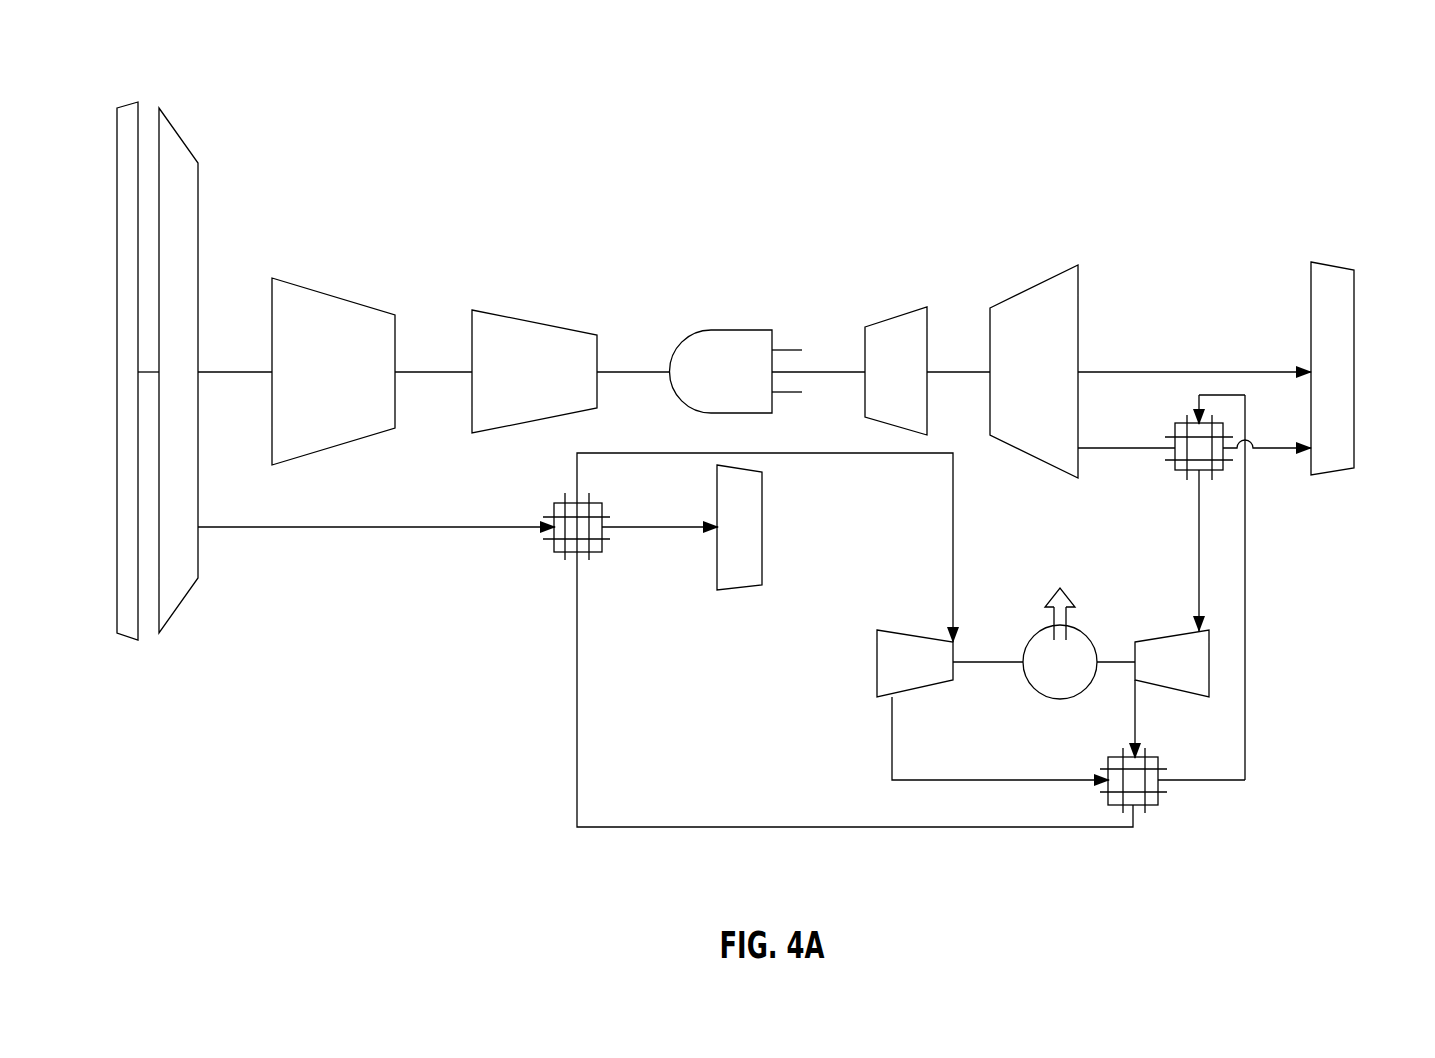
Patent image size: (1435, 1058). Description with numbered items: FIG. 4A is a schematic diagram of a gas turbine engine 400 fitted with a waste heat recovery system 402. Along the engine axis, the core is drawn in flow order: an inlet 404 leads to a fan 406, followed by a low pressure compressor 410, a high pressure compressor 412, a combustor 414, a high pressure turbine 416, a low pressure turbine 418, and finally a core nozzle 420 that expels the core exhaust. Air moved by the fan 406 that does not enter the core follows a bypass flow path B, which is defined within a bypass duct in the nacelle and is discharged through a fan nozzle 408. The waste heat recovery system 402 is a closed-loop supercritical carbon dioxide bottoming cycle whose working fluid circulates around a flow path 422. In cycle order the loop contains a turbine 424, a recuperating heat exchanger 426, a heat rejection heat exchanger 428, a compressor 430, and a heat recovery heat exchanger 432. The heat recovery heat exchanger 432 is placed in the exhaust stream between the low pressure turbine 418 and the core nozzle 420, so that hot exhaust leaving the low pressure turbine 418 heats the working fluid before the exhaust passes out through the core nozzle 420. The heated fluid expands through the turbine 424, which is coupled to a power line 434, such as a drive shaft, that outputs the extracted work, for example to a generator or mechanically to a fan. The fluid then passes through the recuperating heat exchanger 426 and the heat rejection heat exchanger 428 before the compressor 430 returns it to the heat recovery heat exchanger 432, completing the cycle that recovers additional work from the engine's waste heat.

The gas turbine engine 400 is at (1348, 74).
The waste heat recovery system 402 is at (1292, 703).
The inlet 404 is at (128, 102).
The fan 406 is at (180, 606).
The fan nozzle 408 is at (737, 589).
The low pressure compressor 410 is at (337, 296).
The high pressure compressor 412 is at (534, 322).
The combustor 414 is at (731, 329).
The high pressure turbine 416 is at (896, 316).
The low pressure turbine 418 is at (1035, 284).
The core nozzle 420 is at (1330, 264).
The sCO2 flow path 422 is at (790, 828).
The turbine 424 is at (1162, 633).
The recuperating heat exchanger 426 is at (1152, 806).
The heat rejection heat exchanger 428 is at (560, 553).
The compressor 430 is at (916, 633).
The heat recovery heat exchanger 432 is at (1181, 475).
The power line 434 is at (1060, 699).
The bypass flow path B is at (382, 530).